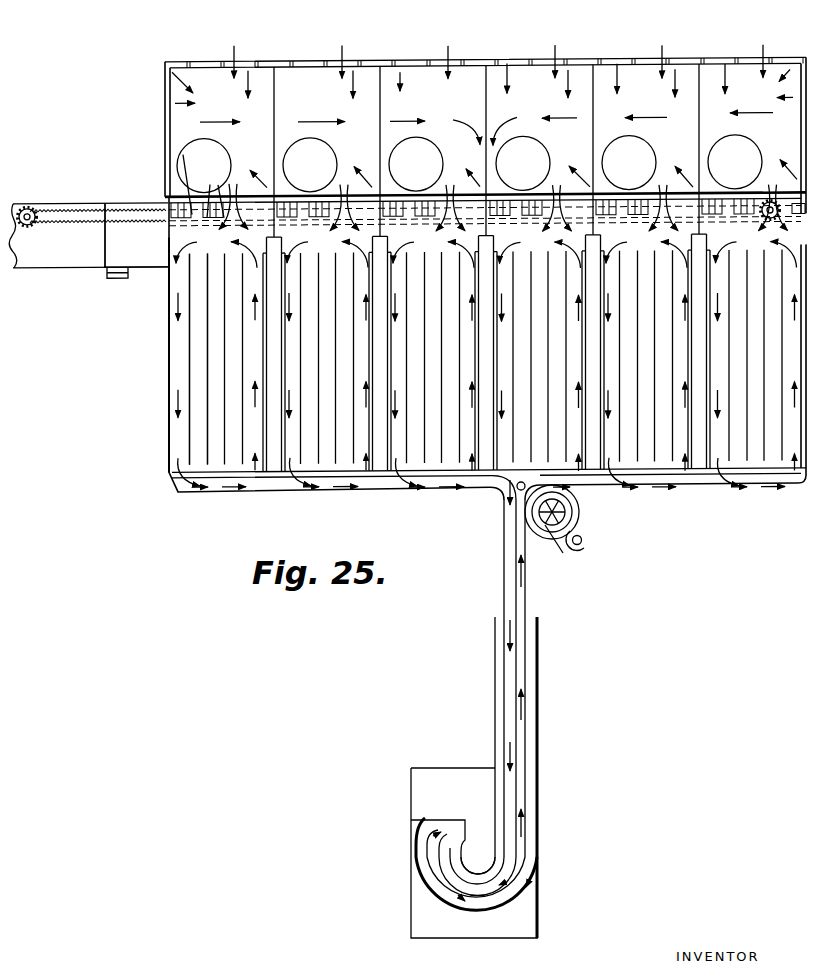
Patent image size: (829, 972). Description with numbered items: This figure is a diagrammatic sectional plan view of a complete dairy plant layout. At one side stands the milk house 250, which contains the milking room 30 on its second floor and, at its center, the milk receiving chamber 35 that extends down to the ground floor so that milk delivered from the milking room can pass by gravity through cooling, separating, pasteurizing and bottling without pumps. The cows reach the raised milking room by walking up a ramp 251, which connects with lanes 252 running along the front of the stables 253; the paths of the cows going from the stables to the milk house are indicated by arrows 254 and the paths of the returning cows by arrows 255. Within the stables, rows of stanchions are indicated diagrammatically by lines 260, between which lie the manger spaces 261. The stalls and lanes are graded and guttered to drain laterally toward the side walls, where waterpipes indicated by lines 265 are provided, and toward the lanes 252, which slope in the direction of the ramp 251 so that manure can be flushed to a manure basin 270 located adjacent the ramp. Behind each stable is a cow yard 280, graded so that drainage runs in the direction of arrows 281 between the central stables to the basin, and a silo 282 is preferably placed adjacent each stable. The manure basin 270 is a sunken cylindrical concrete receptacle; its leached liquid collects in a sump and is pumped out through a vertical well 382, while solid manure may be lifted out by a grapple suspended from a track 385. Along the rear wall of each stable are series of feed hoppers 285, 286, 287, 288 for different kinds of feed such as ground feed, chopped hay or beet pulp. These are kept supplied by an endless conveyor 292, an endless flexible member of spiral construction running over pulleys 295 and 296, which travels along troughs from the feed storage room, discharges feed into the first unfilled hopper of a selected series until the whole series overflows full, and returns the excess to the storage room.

The milking room 30 is at (423, 861).
The milk receiving chamber 35 is at (470, 860).
The milk house 250 is at (540, 916).
The ramp 251 is at (503, 601).
The lanes 252 is at (398, 489).
The stables 253 is at (170, 368).
The arrows 254 is at (305, 486).
The arrows 255 is at (272, 485).
The lines 260 is at (228, 442).
The manger spaces 261 is at (213, 338).
The lines 265 is at (175, 405).
The manure basin 270 is at (580, 522).
The cow yard 280 is at (257, 82).
The arrows 281 is at (352, 94).
The silo 282 is at (185, 175).
The hoppers 285 is at (168, 224).
The hoppers 286 is at (192, 216).
The hoppers 287 is at (207, 220).
The hoppers 288 is at (224, 220).
The endless conveyor 292 is at (73, 224).
The pulley 295 is at (29, 208).
The pulley 296 is at (771, 208).
The well 382 is at (581, 545).
The track 385 is at (542, 540).